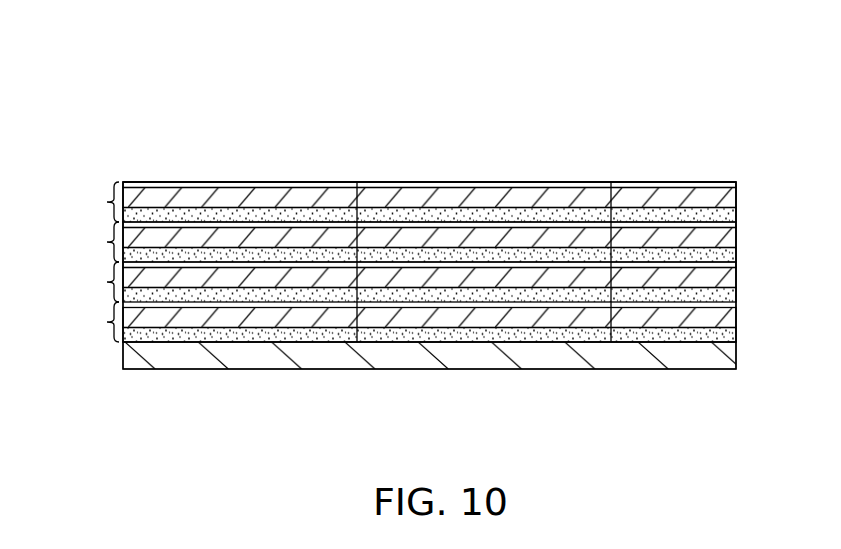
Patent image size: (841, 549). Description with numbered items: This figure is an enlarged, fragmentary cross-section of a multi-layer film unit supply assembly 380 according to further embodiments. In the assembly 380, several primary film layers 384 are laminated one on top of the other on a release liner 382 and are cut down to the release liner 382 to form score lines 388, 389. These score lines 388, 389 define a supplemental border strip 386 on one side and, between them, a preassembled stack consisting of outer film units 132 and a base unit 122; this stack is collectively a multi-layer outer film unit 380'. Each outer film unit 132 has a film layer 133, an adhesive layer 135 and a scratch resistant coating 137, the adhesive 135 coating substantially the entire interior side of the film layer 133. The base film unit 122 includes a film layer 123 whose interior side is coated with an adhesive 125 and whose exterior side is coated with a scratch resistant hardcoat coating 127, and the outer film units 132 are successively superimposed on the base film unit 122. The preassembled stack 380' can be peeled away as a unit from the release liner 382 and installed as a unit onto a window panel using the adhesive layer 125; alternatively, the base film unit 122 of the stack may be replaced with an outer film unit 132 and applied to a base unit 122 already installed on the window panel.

The multi-layer film unit supply assembly 380 is at (429, 191).
The multi-layer outer film unit 380' is at (429, 196).
The release liner 382 is at (420, 355).
The primary film layers 384 is at (165, 235).
The supplemental border strip 386 is at (400, 179).
The score line 388 is at (354, 198).
The score line 389 is at (608, 198).
The scratch resistant coating 137 is at (640, 223).
The scratch resistant hardcoat coating 127 is at (697, 303).
The film layer 133 is at (735, 186).
The adhesive layer 135 is at (735, 212).
The film layer 123 is at (735, 318).
The adhesive 125 is at (735, 335).
The outer film units 132 is at (106, 202).
The base film unit 122 is at (106, 322).